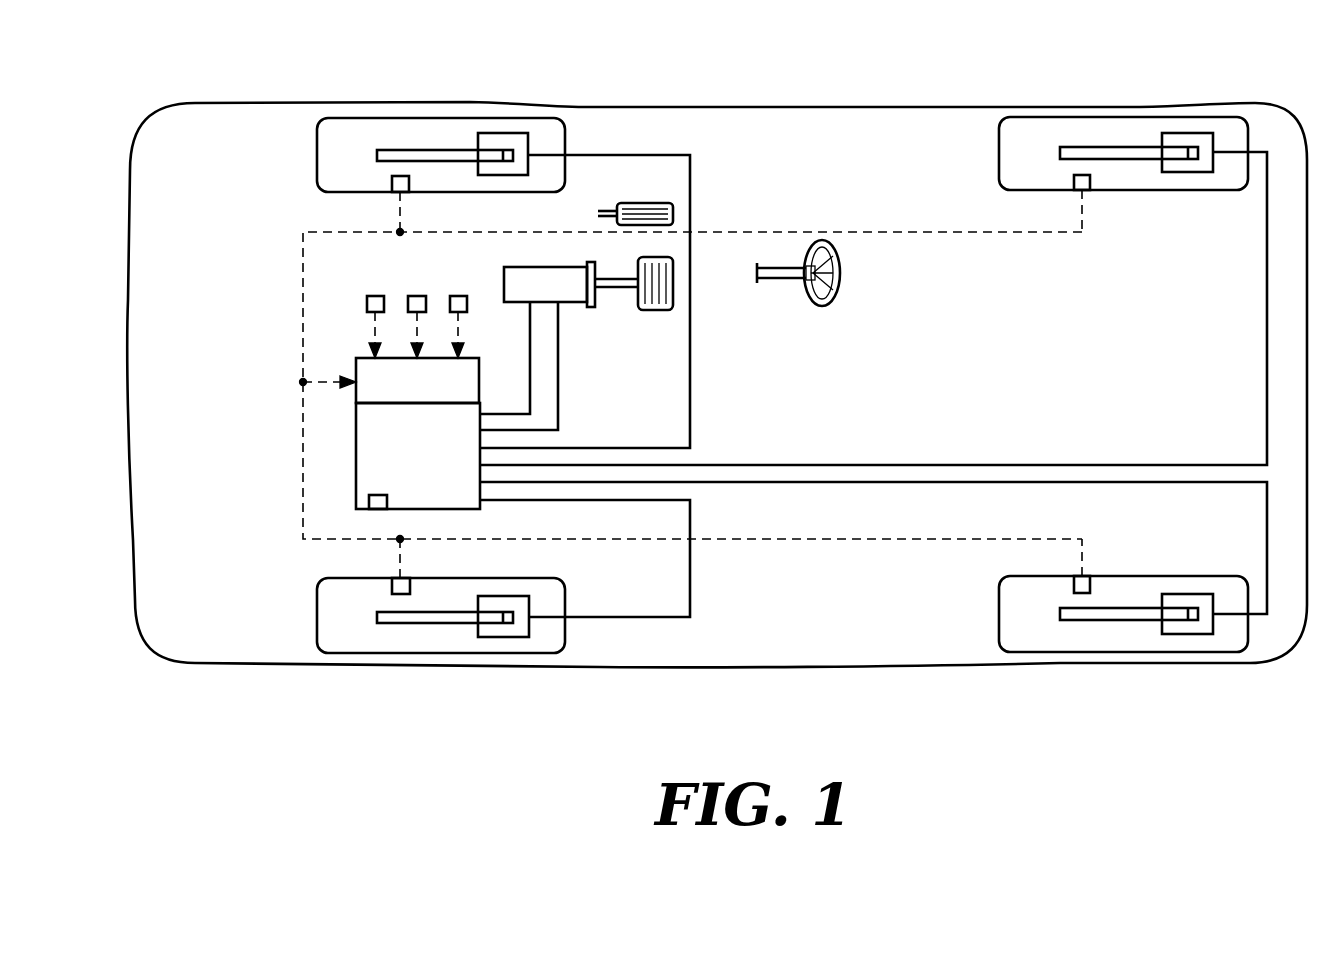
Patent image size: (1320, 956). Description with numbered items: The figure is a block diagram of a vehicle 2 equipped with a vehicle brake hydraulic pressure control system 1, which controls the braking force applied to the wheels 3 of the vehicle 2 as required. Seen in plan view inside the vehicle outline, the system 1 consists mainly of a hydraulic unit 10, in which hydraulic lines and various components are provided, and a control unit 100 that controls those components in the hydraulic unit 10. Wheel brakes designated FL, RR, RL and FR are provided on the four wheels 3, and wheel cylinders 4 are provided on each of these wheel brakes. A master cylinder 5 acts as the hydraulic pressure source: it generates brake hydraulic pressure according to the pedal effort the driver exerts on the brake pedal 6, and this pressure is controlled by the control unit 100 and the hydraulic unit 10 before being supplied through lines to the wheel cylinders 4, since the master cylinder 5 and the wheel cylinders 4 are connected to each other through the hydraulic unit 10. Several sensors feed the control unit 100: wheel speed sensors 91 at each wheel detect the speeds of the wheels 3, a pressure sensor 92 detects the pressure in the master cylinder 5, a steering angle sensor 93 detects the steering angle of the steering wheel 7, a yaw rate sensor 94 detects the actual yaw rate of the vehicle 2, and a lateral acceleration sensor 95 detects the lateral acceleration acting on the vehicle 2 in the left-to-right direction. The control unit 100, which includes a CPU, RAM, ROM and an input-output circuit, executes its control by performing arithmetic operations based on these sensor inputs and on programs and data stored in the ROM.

The vehicle brake hydraulic pressure control system 1 is at (350, 368).
The vehicle 2 is at (831, 90).
The wheels 3 is at (447, 125).
The wheel cylinders 4 is at (503, 140).
The master cylinder 5 is at (566, 302).
The brake pedal 6 is at (673, 292).
The steering wheel 7 is at (843, 272).
The hydraulic unit 10 is at (370, 469).
The wheel speed sensors 91 is at (392, 195).
The pressure sensor 92 is at (378, 509).
The steering angle sensor 93 is at (375, 296).
The yaw rate sensor 94 is at (417, 296).
The lateral acceleration sensor 95 is at (458, 296).
The control unit 100 is at (358, 393).